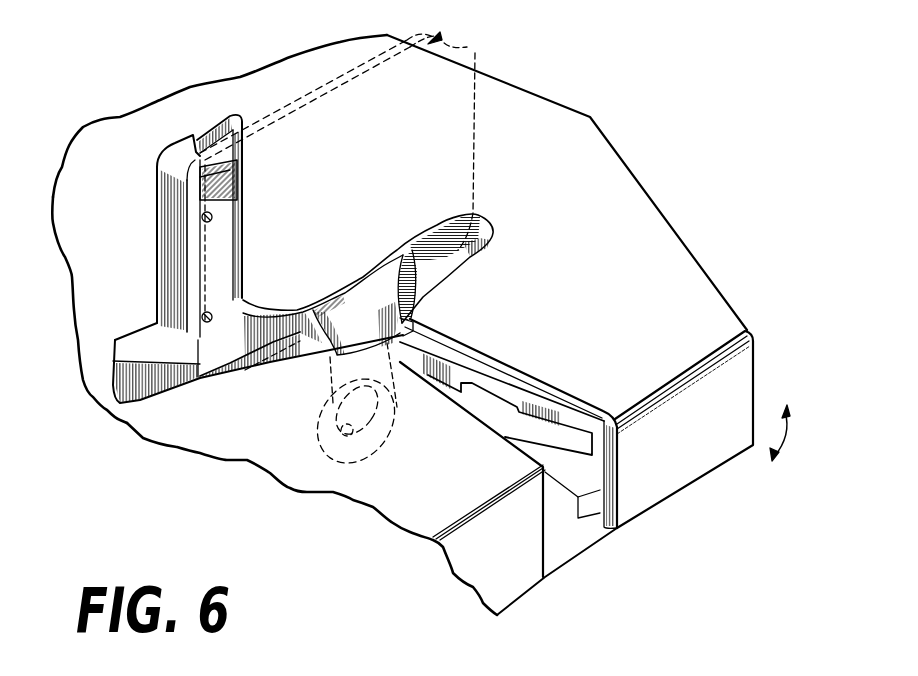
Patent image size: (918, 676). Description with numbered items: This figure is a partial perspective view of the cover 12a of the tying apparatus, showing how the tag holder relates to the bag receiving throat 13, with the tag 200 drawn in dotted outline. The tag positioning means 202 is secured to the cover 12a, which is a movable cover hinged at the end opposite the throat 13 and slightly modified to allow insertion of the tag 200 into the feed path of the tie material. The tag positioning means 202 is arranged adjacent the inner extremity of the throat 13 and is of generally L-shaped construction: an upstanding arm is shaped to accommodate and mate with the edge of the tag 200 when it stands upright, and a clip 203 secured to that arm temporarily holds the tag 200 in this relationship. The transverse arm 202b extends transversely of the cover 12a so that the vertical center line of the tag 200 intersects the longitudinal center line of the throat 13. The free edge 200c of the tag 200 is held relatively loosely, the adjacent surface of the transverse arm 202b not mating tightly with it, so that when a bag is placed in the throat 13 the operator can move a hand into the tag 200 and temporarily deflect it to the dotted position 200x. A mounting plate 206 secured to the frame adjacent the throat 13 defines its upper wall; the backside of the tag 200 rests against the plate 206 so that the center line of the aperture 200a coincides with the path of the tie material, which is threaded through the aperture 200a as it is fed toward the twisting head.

The cover 12a is at (683, 247).
The throat 13 is at (490, 425).
The tag 200 is at (475, 53).
The aperture 200a is at (307, 510).
The free edge 200c is at (462, 188).
The deflected tag position 200x is at (440, 37).
The tag positioning means 202 is at (160, 217).
The transverse arm 202b is at (480, 231).
The clip 203 is at (240, 233).
The mounting plate 206 is at (582, 440).